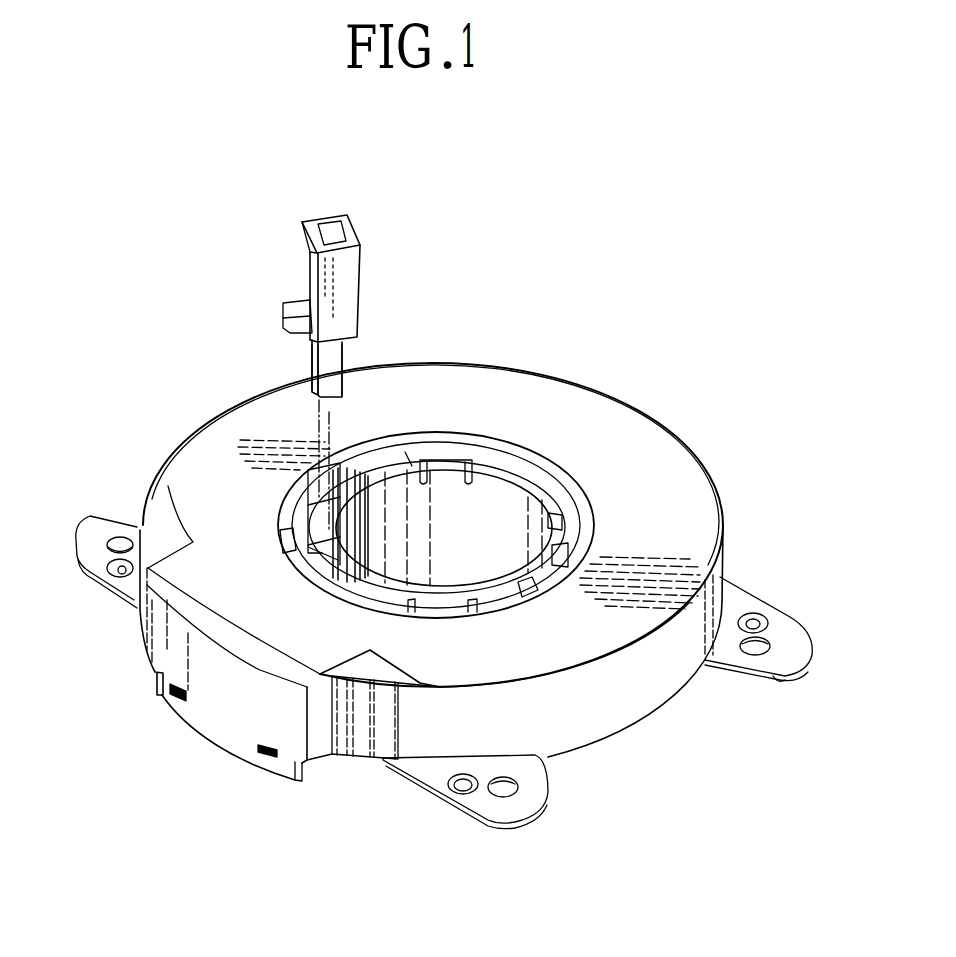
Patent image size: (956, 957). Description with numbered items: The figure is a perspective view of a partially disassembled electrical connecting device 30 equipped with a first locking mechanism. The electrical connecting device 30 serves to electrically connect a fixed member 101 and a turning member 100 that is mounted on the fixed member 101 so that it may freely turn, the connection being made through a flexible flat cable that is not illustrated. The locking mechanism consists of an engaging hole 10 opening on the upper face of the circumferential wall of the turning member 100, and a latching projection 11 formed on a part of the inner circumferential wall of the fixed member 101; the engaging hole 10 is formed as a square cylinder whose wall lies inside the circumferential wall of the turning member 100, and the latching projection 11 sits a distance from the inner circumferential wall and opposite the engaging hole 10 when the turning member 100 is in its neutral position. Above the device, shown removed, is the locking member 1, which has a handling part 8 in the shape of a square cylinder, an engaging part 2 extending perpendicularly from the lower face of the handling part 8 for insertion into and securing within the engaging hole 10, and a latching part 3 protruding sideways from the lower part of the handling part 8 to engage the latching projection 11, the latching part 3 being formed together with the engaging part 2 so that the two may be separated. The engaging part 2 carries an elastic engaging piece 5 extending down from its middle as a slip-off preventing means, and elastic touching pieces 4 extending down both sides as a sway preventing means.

The locking member 1 is at (331, 360).
The engaging part 2 is at (347, 373).
The latching part 3 is at (303, 307).
The elastic touching pieces 4 is at (333, 357).
The elastic engaging piece 5 is at (312, 365).
The handling part 8 is at (347, 278).
The engaging hole 10 is at (323, 535).
The latching projection 11 is at (280, 533).
The electrical connecting device 30 is at (593, 378).
The turning member 100 is at (487, 487).
The fixed member 101 is at (217, 453).